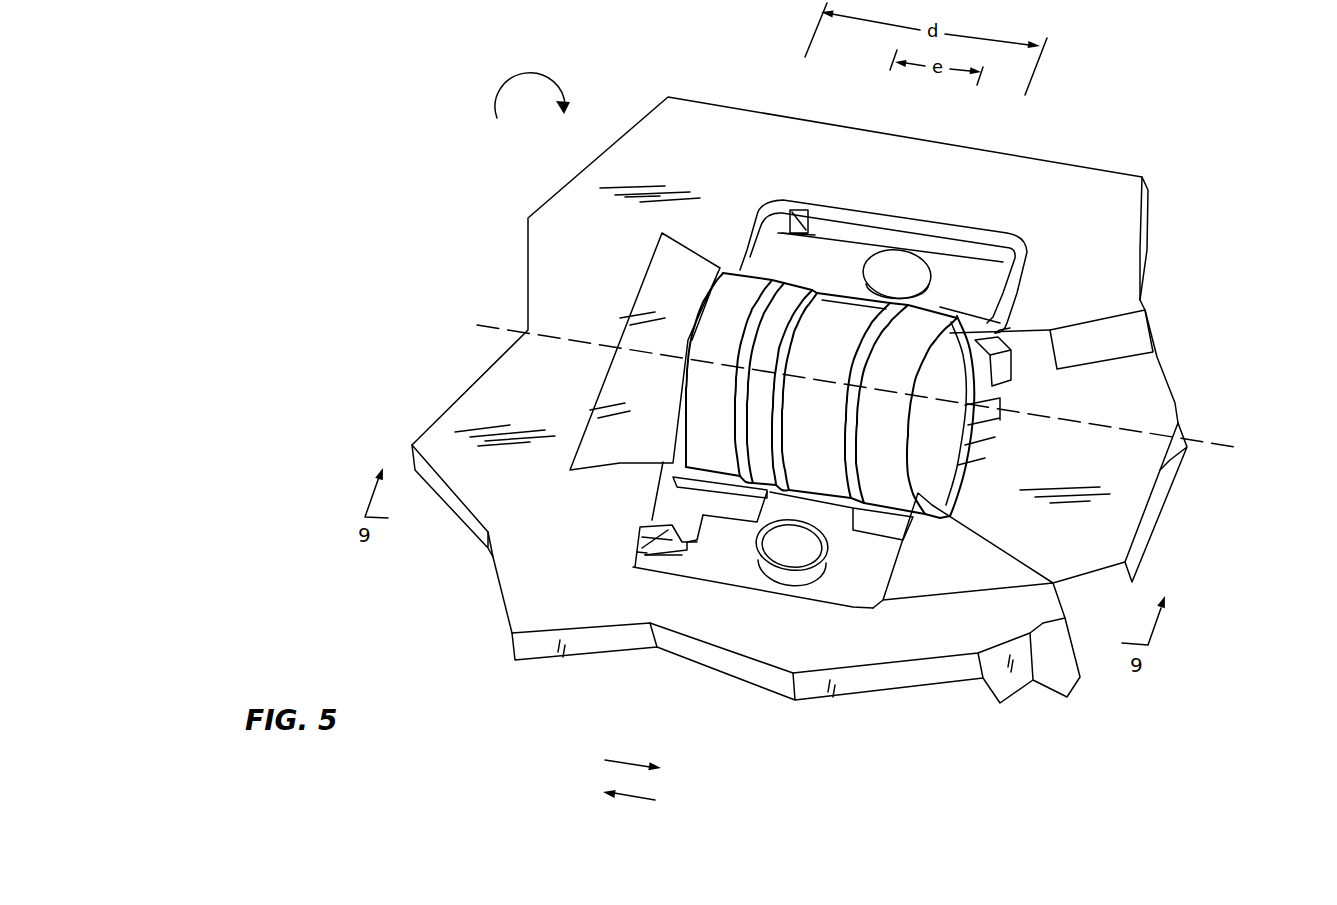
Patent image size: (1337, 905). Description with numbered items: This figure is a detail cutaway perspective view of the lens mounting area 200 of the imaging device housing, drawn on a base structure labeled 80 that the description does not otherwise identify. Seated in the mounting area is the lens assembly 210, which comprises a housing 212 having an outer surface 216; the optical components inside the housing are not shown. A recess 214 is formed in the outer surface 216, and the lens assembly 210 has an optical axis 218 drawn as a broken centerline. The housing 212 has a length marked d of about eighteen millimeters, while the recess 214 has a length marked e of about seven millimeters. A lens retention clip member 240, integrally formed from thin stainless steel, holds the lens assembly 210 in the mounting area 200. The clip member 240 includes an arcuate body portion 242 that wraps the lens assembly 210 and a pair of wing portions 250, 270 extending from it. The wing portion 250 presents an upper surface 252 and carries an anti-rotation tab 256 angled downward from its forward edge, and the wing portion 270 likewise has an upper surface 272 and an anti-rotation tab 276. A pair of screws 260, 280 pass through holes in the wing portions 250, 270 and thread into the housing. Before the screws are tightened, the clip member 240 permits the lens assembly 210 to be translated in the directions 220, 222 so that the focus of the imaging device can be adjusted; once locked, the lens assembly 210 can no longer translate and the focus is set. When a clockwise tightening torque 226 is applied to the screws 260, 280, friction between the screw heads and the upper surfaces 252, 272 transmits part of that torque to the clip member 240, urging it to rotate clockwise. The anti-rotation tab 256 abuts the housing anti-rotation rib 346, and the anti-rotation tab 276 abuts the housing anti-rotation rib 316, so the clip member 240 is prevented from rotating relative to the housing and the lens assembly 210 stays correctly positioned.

The housing base plate 80 is at (683, 160).
The lens mounting area 200 is at (950, 205).
The lens assembly 210 is at (982, 273).
The housing 212 is at (920, 363).
The recess 214 is at (818, 278).
The outer surface 216 is at (720, 313).
The optical axis 218 is at (1245, 450).
The direction 220 is at (620, 760).
The direction 222 is at (642, 800).
The clockwise tightening torque 226 is at (497, 84).
The lens retention clip member 240 is at (826, 438).
The arcuate body portion 242 is at (835, 338).
The wing portion 250 is at (709, 578).
The upper surface 252 is at (867, 577).
The anti-rotation tab 256 is at (661, 572).
The screw 260 is at (783, 558).
The wing portion 270 is at (1010, 252).
The upper surface 272 is at (853, 252).
The anti-rotation tab 276 is at (803, 268).
The screw 280 is at (900, 258).
The housing anti-rotation rib 316 is at (786, 258).
The housing anti-rotation rib 346 is at (637, 552).